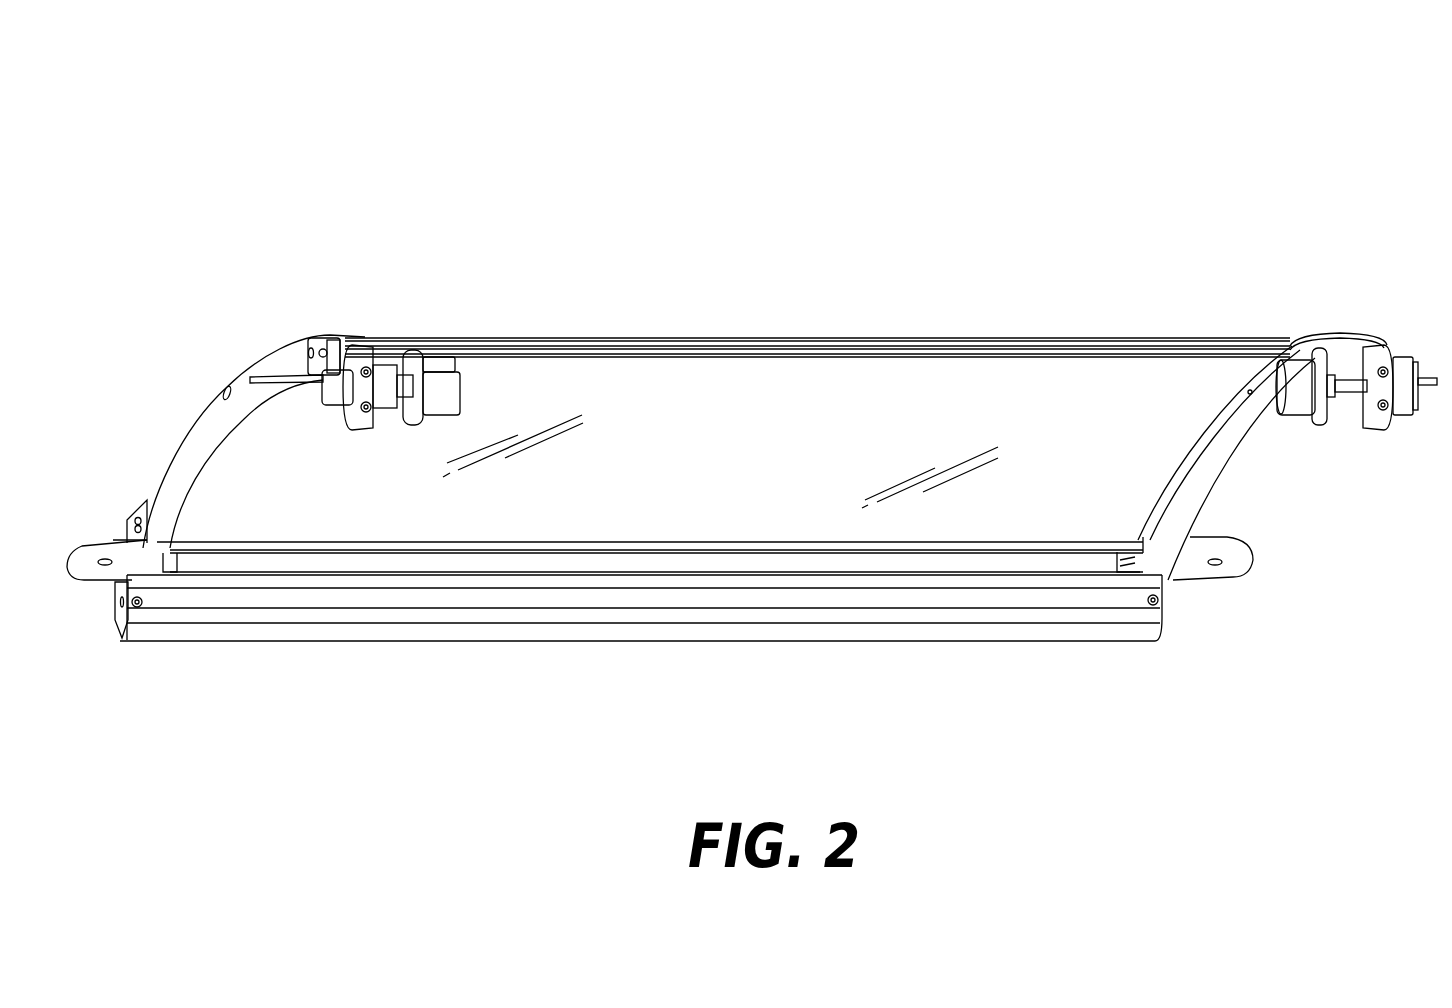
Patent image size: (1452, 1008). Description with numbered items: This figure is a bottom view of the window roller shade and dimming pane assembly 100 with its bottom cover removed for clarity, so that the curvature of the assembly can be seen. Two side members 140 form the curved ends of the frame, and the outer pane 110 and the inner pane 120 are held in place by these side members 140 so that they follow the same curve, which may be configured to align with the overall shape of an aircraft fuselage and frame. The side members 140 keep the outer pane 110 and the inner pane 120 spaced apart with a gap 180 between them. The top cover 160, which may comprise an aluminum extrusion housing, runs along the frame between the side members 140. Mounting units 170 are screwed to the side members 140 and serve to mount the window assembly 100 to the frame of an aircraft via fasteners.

The window roller shade and dimming pane assembly 100 is at (242, 149).
The outer pane 110 is at (1195, 340).
The inner pane 120 is at (1047, 355).
The side members 140 is at (205, 427).
The top cover 160 is at (1060, 630).
The mounting units 170 is at (1245, 565).
The gap 180 is at (967, 338).